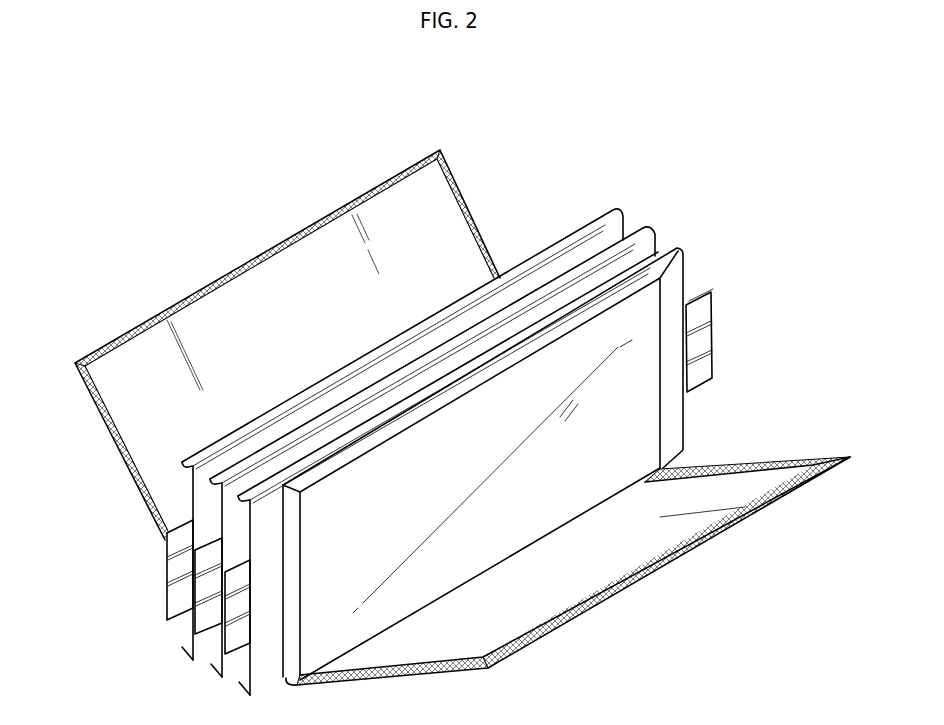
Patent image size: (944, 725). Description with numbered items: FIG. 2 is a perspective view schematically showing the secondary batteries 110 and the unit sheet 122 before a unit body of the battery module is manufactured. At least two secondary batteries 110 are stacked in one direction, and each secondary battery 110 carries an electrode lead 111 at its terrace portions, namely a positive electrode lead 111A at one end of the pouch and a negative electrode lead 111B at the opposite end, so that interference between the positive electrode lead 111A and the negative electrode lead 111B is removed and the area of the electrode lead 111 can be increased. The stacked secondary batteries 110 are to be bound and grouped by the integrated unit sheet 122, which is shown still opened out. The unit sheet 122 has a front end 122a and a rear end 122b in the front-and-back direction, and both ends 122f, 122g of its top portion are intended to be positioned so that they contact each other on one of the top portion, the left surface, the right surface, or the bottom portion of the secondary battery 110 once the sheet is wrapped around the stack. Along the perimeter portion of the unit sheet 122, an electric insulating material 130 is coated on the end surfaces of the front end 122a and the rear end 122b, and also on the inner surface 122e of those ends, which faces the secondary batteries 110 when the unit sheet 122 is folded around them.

The secondary battery 110 is at (667, 249).
The electrode lead 111 is at (597, 66).
The positive electrode lead 111A is at (143, 582).
The negative electrode lead 111B is at (737, 292).
The unit sheet 122 is at (482, 193).
The front end 122a is at (122, 463).
The rear end 122b is at (490, 248).
The inner surface 122e is at (217, 338).
The end of the top portion of the unit sheet 122f is at (257, 257).
The end of the top portion of the unit sheet 122g is at (663, 568).
The electric insulating material 130 is at (360, 192).